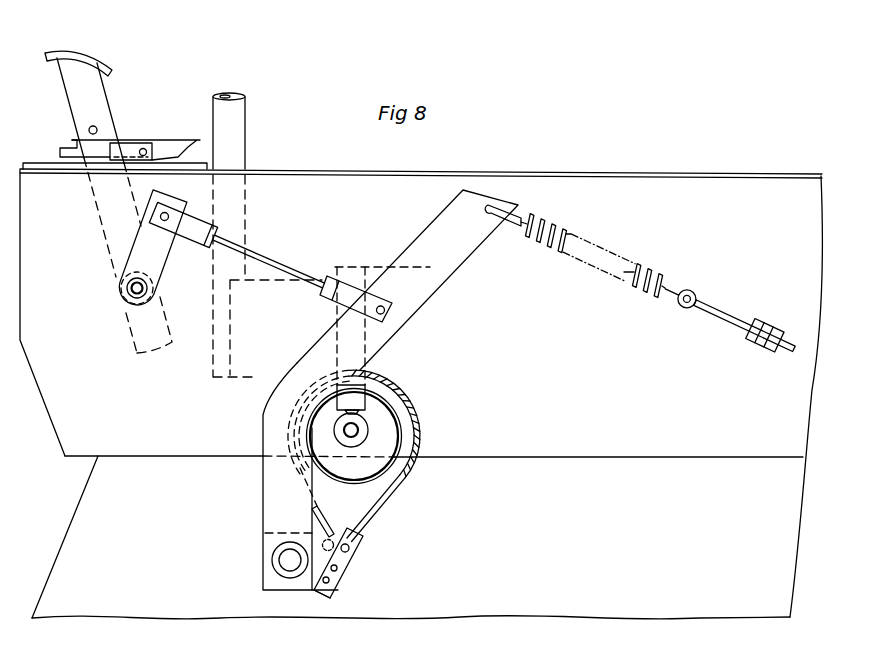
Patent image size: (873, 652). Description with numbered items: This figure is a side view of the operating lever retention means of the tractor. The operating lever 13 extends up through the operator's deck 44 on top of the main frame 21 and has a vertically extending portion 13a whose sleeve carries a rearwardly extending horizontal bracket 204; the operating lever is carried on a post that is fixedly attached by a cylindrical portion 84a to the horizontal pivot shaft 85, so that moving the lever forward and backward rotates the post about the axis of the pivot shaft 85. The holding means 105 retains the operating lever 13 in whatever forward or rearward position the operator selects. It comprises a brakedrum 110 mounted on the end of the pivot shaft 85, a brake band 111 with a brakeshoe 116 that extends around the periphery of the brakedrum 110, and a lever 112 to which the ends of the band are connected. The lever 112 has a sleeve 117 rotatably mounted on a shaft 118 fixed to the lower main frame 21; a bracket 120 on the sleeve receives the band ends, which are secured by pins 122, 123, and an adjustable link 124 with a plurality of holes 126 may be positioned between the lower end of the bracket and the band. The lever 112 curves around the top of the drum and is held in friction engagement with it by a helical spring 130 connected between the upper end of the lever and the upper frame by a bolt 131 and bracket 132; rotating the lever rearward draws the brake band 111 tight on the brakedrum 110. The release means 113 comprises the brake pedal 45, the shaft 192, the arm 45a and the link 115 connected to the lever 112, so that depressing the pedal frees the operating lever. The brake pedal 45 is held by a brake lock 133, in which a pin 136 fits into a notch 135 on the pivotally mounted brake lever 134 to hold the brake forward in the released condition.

The operator's deck 44 is at (517, 171).
The main frame 21 is at (580, 533).
The brake pedal 45 is at (90, 55).
The arm 45a is at (140, 245).
The pin 136 is at (89, 130).
The notch 135 is at (72, 142).
The brake lock 133 is at (132, 128).
The brake lever 134 is at (202, 123).
The operating lever 13 is at (240, 127).
The vertically extending portion 13a is at (376, 263).
The horizontal bracket 204 is at (408, 268).
The shaft 192 is at (127, 285).
The release means 113 is at (198, 258).
The link 115 is at (253, 253).
The holding means 105 is at (455, 378).
The helical spring 130 is at (553, 218).
The bolt 131 is at (718, 318).
The bracket 132 is at (772, 348).
The lever 112 is at (263, 408).
The cylindrical portion 84a is at (366, 417).
The pivot shaft 85 is at (351, 430).
The brake band 111 is at (392, 490).
The brakedrum 110 is at (358, 488).
The brakeshoe 116 is at (408, 465).
The sleeve 117 is at (274, 558).
The shaft 118 is at (284, 566).
The bracket 120 is at (342, 588).
The pin 122 is at (349, 556).
The pin 123 is at (352, 545).
The holes 126 is at (311, 597).
The adjustable link 124 is at (323, 599).